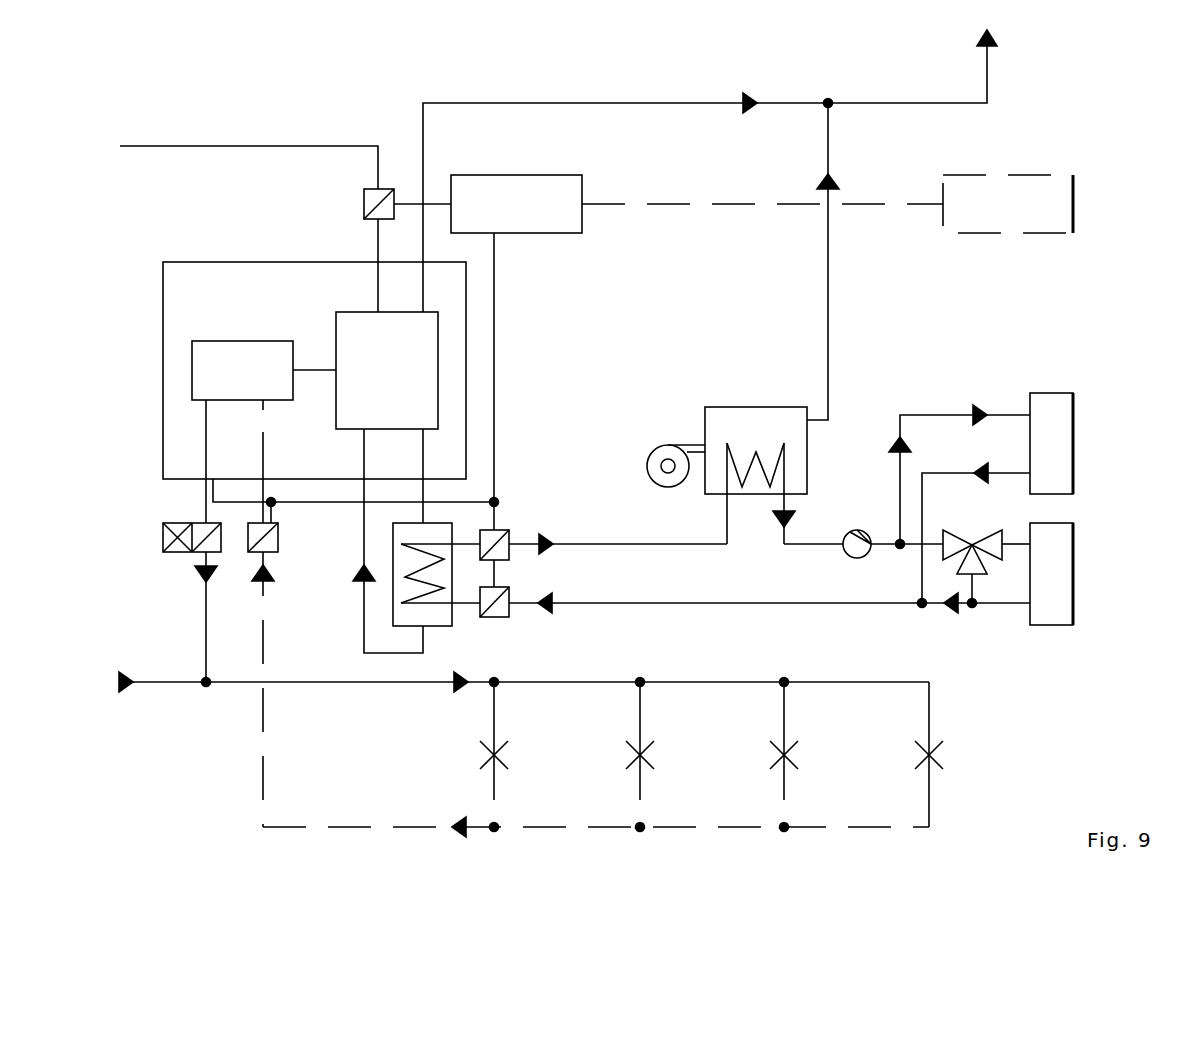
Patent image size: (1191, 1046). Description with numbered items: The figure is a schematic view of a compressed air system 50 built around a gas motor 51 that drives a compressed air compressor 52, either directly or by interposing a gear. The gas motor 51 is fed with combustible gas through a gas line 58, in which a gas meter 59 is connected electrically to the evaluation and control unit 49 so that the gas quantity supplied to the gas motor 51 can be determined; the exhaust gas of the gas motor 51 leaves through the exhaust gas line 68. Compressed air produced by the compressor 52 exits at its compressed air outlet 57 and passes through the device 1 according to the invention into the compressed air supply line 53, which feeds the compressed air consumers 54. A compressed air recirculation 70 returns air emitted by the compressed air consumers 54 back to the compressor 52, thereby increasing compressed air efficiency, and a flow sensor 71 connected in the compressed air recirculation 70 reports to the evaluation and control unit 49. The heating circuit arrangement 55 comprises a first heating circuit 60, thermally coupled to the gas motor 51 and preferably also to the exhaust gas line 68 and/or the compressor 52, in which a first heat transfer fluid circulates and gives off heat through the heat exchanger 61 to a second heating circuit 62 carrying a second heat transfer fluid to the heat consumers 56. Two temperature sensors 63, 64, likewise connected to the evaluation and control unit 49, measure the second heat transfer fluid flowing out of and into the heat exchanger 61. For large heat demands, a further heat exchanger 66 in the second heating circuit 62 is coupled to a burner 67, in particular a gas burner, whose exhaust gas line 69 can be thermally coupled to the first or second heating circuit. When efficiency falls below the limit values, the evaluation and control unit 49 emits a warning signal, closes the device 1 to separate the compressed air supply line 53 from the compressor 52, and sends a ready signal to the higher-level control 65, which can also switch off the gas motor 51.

The device 1 is at (163, 545).
The evaluation and control unit 49 is at (577, 230).
The compressed air system 50 is at (200, 98).
The gas motor 51 is at (338, 326).
The compressed air compressor 52 is at (232, 343).
The compressed air supply line 53 is at (320, 684).
The compressed air consumers 54 is at (496, 755).
The heating circuit arrangement 55 is at (412, 670).
The heat consumers 56 is at (1055, 393).
The compressed air outlet 57 is at (192, 490).
The gas line 58 is at (210, 148).
The gas meter 59 is at (364, 197).
The first heating circuit 60 is at (364, 616).
The heat exchanger 61 is at (445, 620).
The second heating circuit 62 is at (606, 544).
The temperature sensor 63 is at (510, 530).
The temperature sensor 64 is at (505, 617).
The higher-level control 65 is at (1029, 174).
The heat exchanger 66 is at (775, 405).
The burner 67 is at (660, 446).
The exhaust gas line 68 is at (672, 105).
The exhaust gas line 69 is at (829, 305).
The compressed air recirculation 70 is at (355, 826).
The flow sensor 71 is at (278, 549).